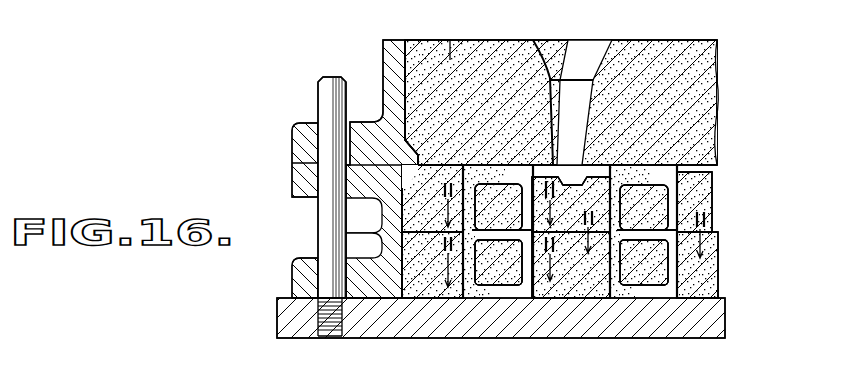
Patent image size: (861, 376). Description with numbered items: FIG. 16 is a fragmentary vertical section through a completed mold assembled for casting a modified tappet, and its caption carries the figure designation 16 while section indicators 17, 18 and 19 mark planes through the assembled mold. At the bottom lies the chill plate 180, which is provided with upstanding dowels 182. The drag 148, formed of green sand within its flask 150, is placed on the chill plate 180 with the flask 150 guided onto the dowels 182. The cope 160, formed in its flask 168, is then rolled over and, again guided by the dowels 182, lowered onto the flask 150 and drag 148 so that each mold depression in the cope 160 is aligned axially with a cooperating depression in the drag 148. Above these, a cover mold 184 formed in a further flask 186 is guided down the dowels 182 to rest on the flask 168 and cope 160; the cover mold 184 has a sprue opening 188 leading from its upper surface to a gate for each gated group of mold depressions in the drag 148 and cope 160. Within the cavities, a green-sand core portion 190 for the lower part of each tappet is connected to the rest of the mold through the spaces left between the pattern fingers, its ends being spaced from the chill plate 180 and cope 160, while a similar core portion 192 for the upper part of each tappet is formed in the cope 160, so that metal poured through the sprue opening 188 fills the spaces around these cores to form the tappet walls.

The cover mold 184 is at (715, 85).
The flask 186 is at (383, 46).
The sprue opening 188 is at (568, 56).
The dowels 182 is at (318, 91).
The flask 168 is at (378, 211).
The flask 150 is at (382, 245).
The chill plate 180 is at (285, 318).
The cope 160 is at (713, 197).
The drag 148 is at (715, 269).
The core portion 192 is at (500, 186).
The core portion 190 is at (493, 290).
The section line 16 is at (564, 203).
The section line 17 is at (485, 269).
The section line 18 is at (427, 205).
The section line 19 is at (639, 246).